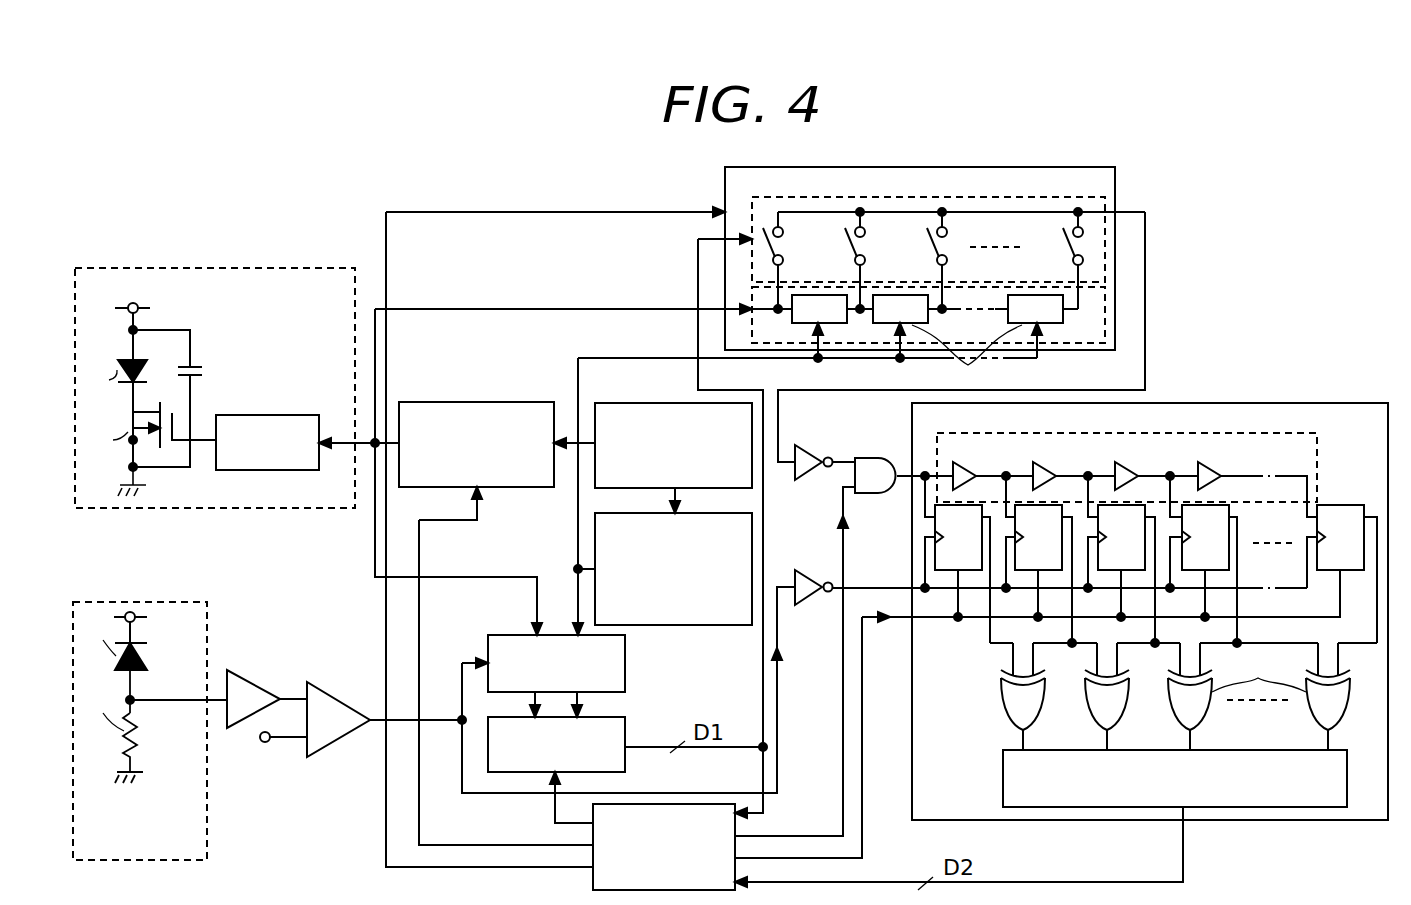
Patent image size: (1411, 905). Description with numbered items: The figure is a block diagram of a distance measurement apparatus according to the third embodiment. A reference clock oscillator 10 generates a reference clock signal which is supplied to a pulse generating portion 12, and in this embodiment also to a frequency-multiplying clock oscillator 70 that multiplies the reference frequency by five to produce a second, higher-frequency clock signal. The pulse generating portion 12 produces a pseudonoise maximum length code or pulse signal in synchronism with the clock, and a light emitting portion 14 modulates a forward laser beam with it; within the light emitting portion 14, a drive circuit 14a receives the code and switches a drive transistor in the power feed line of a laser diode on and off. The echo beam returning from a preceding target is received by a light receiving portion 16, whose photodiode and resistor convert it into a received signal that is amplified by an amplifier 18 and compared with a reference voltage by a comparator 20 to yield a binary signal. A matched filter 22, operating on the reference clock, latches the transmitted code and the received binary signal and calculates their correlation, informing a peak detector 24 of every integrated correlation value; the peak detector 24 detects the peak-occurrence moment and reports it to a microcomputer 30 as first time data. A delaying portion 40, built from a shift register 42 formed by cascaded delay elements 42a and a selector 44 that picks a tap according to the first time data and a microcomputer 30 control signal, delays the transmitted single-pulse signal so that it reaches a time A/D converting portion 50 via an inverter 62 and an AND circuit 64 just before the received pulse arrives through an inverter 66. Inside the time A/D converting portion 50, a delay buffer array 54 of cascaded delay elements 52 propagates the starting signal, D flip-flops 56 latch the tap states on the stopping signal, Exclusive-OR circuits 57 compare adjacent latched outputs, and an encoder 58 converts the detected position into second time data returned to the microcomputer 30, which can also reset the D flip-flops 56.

The reference clock oscillator 10 is at (612, 403).
The pulse generating portion 12 is at (507, 401).
The light emitting portion 14 is at (304, 265).
The drive circuit 14a is at (280, 415).
The light receiving portion 16 is at (207, 835).
The amplifier 18 is at (254, 680).
The comparator 20 is at (339, 692).
The matched filter 22 is at (627, 650).
The peak detector 24 is at (627, 723).
The microcomputer 30 is at (593, 880).
The delaying portion 40 is at (1115, 185).
The shift register 42 is at (1105, 303).
The delay elements 42a is at (927, 358).
The selector 44 is at (1105, 220).
The time A/D converting portion 50 is at (1303, 403).
The delay elements 52 is at (1115, 466).
The delay buffer array 54 is at (1317, 452).
The D flip-flops 56 is at (1229, 515).
The Exclusive-OR circuits 57 is at (1183, 694).
The encoder 58 is at (1003, 765).
The inverter 62 is at (812, 445).
The AND circuit 64 is at (871, 458).
The inverter 66 is at (812, 569).
The frequency-multiplying clock oscillator 70 is at (712, 625).